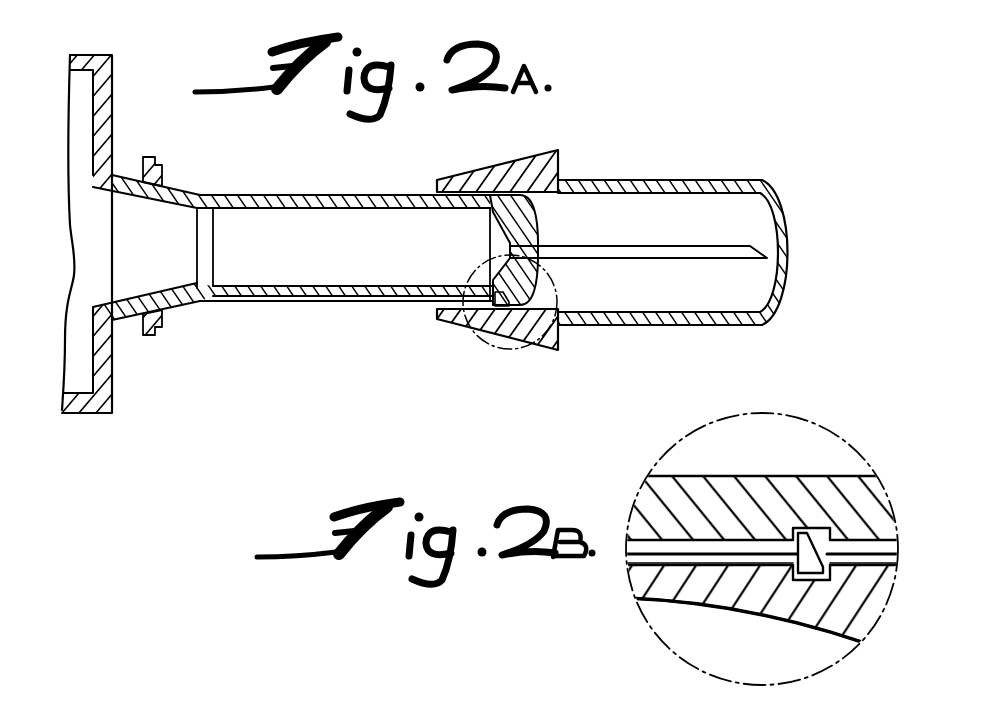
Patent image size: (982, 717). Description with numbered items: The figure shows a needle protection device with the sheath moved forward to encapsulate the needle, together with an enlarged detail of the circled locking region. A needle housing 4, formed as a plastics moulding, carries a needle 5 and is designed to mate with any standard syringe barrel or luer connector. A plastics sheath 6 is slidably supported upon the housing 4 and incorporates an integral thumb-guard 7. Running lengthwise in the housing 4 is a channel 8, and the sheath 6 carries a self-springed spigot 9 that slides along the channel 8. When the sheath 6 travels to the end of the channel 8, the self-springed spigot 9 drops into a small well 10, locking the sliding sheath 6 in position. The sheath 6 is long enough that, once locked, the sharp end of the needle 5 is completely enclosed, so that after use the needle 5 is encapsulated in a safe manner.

In FIG. 2A, the needle housing 4 is at (288, 193).
In FIG. 2A, the needle 5 is at (673, 250).
In FIG. 2A, the plastics sheath 6 is at (707, 188).
In FIG. 2A, the thumb-guard 7 is at (530, 163).
In FIG. 2B, the thumb-guard 7 is at (720, 580).
In FIG. 2A, the channel 8 is at (316, 298).
In FIG. 2A, the self-springed spigot 9 is at (497, 306).
In FIG. 2B, the self-springed spigot 9 is at (810, 568).
In FIG. 2B, the well 10 is at (820, 536).